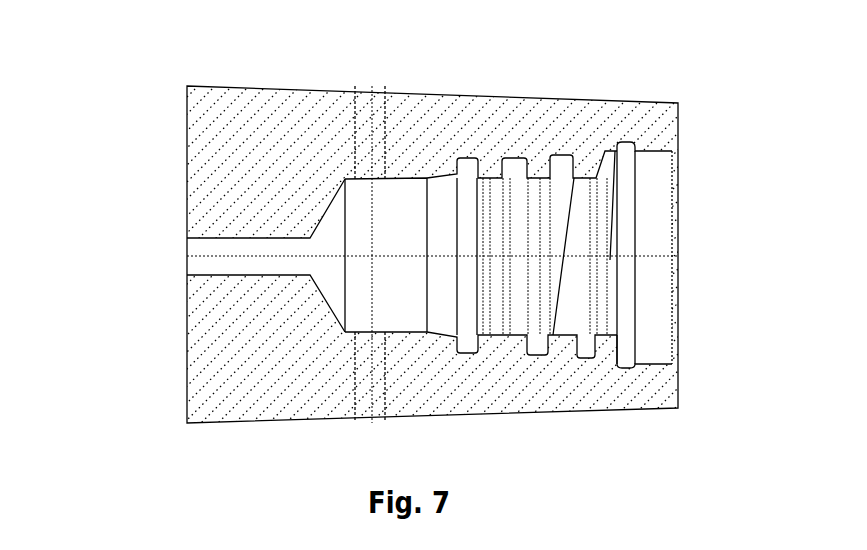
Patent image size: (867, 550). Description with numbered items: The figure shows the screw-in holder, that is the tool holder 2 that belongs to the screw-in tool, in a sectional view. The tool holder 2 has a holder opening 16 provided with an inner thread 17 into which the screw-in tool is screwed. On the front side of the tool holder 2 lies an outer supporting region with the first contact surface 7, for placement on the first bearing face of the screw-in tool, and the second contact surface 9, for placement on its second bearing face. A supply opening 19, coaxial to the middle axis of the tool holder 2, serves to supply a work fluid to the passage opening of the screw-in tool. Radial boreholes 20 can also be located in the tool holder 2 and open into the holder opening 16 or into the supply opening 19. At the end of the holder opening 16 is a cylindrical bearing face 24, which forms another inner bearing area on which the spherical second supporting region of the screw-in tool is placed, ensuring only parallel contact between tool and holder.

The tool holder 2 is at (125, 362).
The first contact surface 7 is at (678, 125).
The second contact surface 9 is at (652, 360).
The holder opening 16 is at (404, 188).
The inner thread 17 is at (560, 154).
The supply opening 19 is at (199, 248).
The radial boreholes 20 is at (362, 375).
The cylindrical bearing face 24 is at (405, 332).